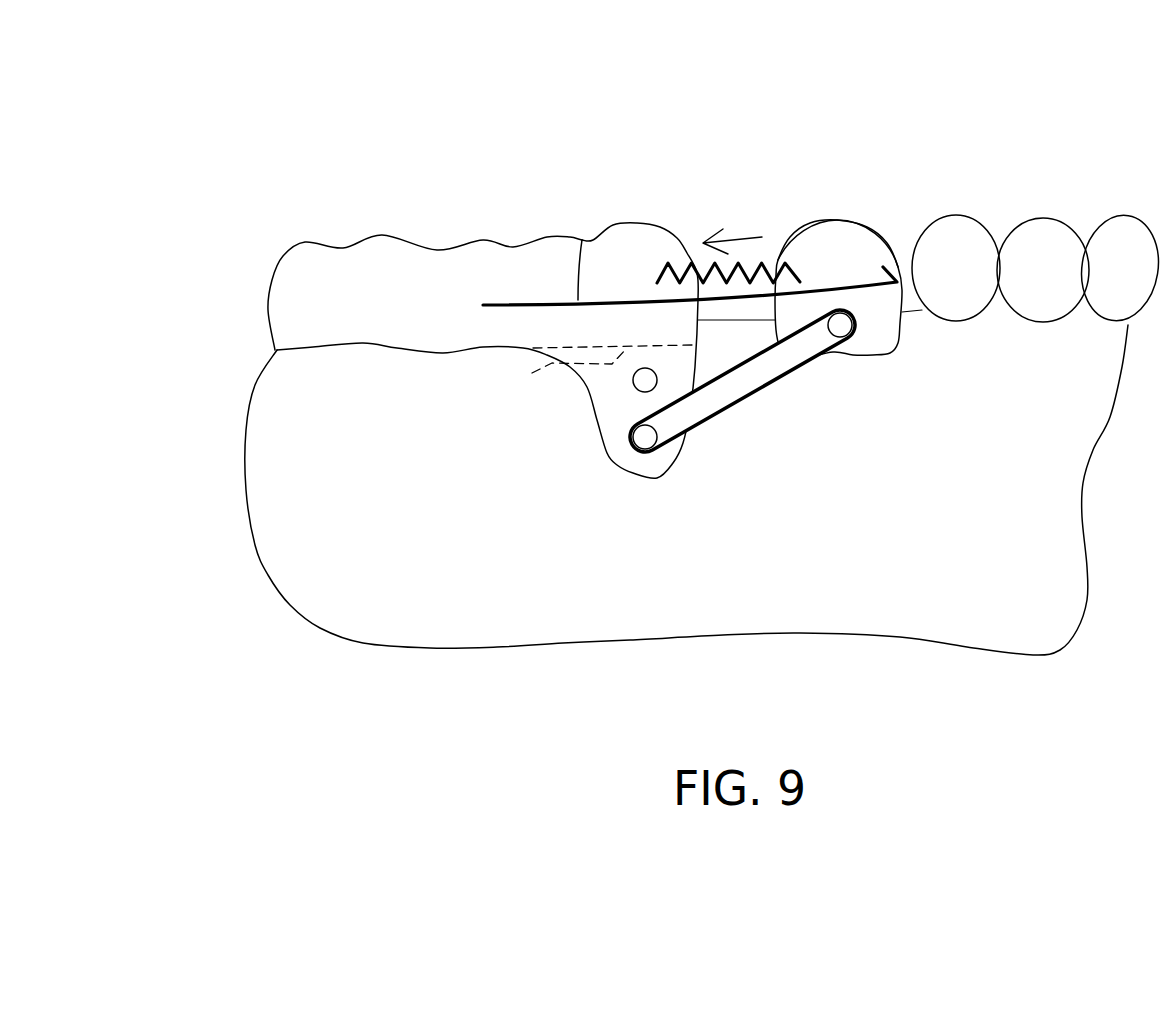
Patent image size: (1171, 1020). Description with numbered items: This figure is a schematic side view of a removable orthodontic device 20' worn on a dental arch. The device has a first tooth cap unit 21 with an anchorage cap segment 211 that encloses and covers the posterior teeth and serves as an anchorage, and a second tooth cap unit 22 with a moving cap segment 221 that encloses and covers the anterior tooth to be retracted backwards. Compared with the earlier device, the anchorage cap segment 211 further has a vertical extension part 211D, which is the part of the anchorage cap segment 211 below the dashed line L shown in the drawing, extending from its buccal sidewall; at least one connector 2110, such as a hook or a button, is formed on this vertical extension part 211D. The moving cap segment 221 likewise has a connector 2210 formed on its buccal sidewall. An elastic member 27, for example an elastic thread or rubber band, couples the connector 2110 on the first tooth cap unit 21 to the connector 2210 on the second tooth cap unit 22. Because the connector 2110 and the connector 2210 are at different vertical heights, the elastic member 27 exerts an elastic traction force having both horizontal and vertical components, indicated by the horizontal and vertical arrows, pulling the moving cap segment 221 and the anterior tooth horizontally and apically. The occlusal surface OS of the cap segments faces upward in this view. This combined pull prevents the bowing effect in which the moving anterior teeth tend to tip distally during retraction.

The removable orthodontic device 20' is at (471, 159).
The first tooth cap unit 21 is at (415, 213).
The anchorage cap segment 211 is at (302, 278).
The vertical extension part 211D is at (620, 410).
The connector 2110 is at (634, 383).
The second tooth cap unit 22 is at (868, 215).
The moving cap segment 221 is at (820, 253).
The connector 2210 is at (841, 337).
The elastic member 27 is at (746, 405).
The occlusal surface OS is at (483, 242).
The reference line L is at (603, 368).